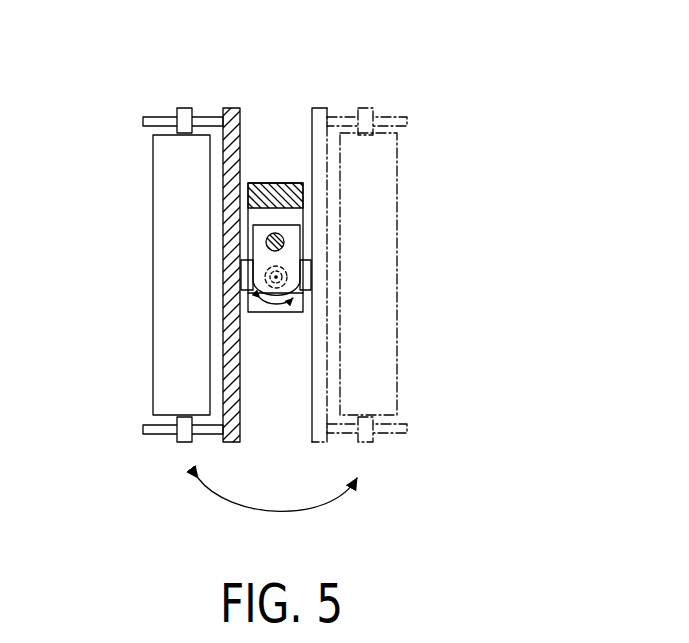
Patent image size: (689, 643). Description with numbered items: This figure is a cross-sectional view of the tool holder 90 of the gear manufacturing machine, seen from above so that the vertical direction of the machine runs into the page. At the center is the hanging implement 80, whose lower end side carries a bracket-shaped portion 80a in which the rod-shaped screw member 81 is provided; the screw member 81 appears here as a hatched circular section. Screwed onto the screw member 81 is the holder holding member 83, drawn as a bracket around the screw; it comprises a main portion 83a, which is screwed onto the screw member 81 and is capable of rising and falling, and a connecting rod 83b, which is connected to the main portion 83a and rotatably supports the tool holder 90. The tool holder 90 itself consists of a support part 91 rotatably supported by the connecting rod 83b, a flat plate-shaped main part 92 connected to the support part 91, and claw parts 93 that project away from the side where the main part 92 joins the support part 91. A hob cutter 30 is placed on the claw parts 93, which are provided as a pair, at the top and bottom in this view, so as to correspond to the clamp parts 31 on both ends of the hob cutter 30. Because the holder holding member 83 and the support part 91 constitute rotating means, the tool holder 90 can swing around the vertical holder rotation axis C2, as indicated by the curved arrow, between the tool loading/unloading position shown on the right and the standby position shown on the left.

The hob cutter 30 is at (152, 250).
The clamp part 31 is at (184, 108).
The hanging implement 80 is at (277, 165).
The bracket-shaped portion 80a is at (285, 183).
The screw member 81 is at (268, 237).
The holder holding member 83 is at (375, 238).
The main portion 83a is at (283, 236).
The connecting rod 83b is at (253, 260).
The tool holder 90 is at (98, 107).
The support part 91 is at (250, 313).
The main part 92 is at (228, 108).
The claw part 93 is at (152, 117).
The holder rotation axis C2 is at (276, 314).